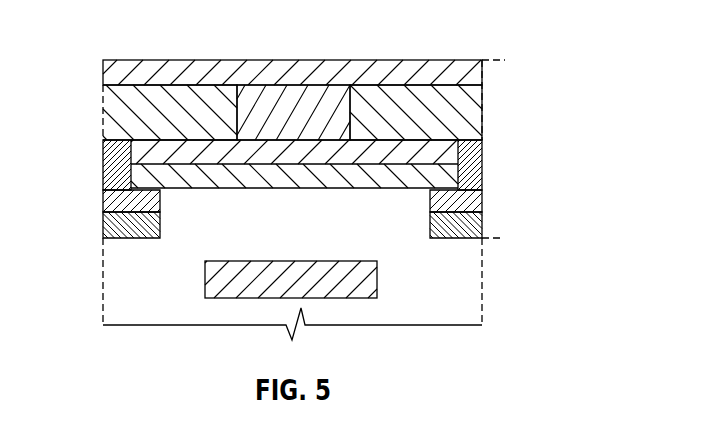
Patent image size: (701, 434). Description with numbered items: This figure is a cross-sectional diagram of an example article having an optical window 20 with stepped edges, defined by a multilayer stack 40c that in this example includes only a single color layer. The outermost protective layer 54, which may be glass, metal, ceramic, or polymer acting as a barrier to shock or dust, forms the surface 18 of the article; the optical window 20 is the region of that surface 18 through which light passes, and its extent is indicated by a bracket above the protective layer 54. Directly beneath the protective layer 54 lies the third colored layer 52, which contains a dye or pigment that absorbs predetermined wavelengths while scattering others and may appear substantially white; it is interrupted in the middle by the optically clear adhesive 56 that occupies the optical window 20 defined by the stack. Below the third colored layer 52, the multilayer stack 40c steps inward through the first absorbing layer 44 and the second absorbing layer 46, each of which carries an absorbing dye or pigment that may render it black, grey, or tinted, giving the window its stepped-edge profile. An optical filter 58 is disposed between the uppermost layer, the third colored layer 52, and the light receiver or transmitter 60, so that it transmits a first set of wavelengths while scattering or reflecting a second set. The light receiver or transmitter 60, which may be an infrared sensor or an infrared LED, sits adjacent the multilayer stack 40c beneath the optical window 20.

The surface 18 is at (141, 60).
The optical window 20 is at (350, 60).
The multilayer stack 40c is at (500, 61).
The first absorbing layer 44 is at (105, 230).
The second absorbing layer 46 is at (117, 203).
The third colored layer 52 is at (108, 105).
The protective layer 54 is at (113, 78).
The optically clear adhesive 56 is at (309, 131).
The optical filter 58 is at (138, 169).
The light receiver or transmitter 60 is at (231, 298).